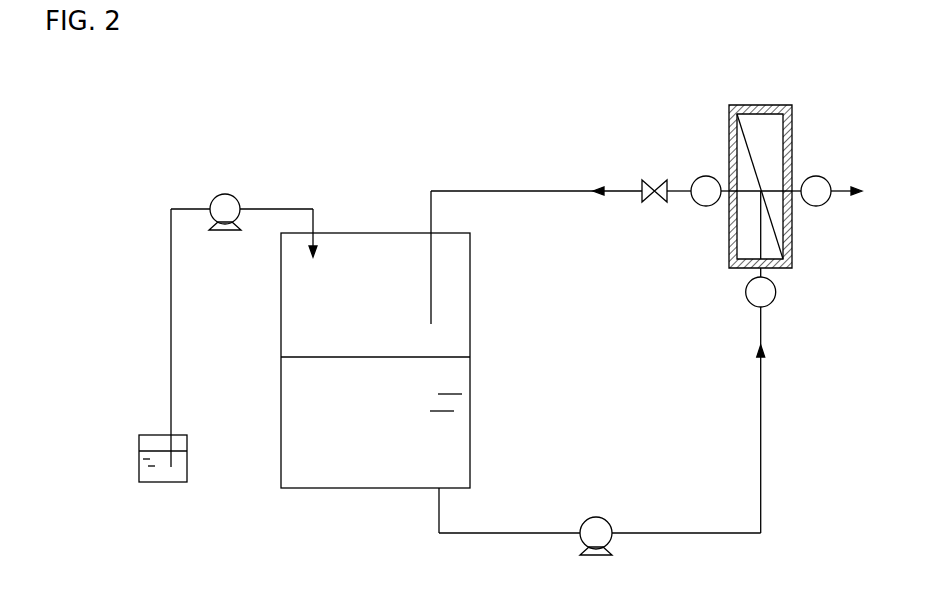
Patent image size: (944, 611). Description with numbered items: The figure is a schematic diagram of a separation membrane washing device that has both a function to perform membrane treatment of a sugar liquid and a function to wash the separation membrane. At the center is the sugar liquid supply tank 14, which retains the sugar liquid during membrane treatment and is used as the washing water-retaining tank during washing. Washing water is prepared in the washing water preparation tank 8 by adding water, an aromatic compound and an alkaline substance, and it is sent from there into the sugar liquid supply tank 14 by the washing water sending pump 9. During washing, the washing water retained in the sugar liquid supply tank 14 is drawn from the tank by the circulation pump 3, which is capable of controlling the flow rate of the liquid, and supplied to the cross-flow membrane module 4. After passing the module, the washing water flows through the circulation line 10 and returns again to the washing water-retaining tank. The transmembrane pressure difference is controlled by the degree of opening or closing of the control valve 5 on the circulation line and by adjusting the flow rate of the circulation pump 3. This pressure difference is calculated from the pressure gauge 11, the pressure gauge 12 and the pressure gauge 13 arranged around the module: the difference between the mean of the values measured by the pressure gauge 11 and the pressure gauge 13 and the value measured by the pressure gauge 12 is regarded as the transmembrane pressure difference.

The circulation pump 3 is at (605, 519).
The cross-flow membrane module 4 is at (725, 262).
The control valve 5 is at (641, 203).
The washing water preparation tank 8 is at (130, 458).
The washing water sending pump 9 is at (243, 202).
The circulation line 10 is at (526, 190).
The pressure gauge 11 is at (693, 168).
The pressure gauge 12 is at (820, 168).
The pressure gauge 13 is at (779, 290).
The sugar liquid supply tank 14 is at (470, 277).